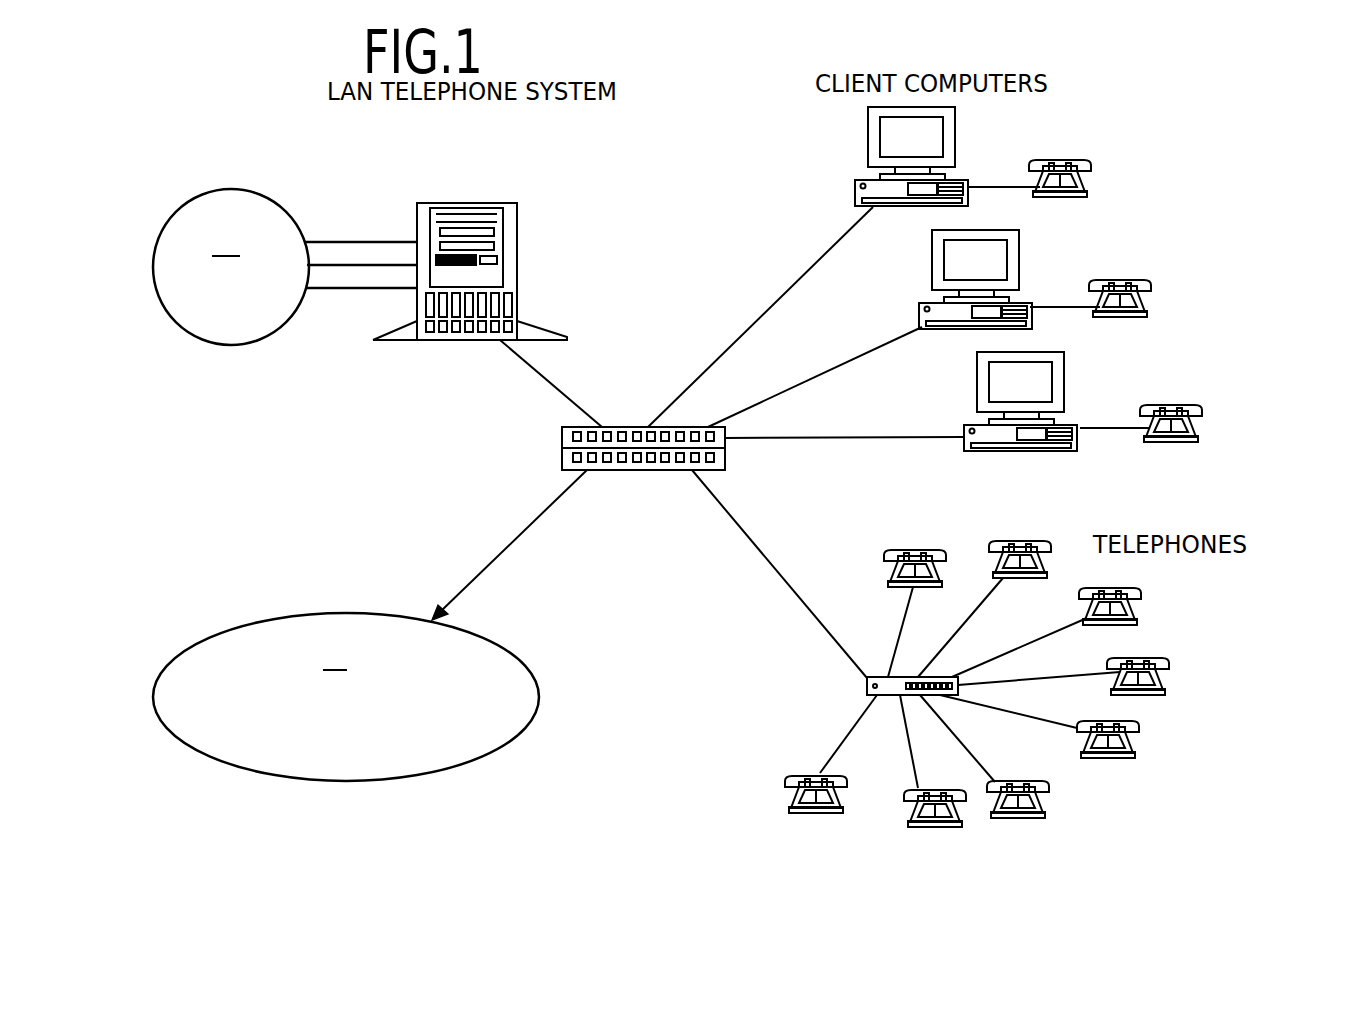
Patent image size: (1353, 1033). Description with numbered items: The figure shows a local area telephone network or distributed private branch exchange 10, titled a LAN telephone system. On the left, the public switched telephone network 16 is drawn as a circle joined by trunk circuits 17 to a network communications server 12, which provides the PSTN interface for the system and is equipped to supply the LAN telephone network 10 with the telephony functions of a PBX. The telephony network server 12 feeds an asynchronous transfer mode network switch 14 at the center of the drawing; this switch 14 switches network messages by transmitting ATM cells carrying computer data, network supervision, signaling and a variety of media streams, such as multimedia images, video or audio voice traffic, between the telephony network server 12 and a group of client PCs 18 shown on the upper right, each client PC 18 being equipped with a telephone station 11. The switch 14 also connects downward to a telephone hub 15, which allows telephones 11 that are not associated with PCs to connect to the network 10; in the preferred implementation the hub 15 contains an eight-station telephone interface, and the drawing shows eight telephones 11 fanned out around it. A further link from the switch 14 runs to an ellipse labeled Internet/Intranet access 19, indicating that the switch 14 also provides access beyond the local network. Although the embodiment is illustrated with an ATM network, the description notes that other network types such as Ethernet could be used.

The local area telephone network 10 is at (1247, 413).
The telephone station 11 is at (1140, 303).
The network communications server 12 is at (441, 203).
The ATM network switch 14 is at (622, 470).
The telephone hub 15 is at (938, 693).
The public switched telephone network 16 is at (231, 267).
The trunk circuits 17 is at (360, 240).
The client PC 18 is at (955, 125).
The Internet/intranet access 19 is at (370, 625).